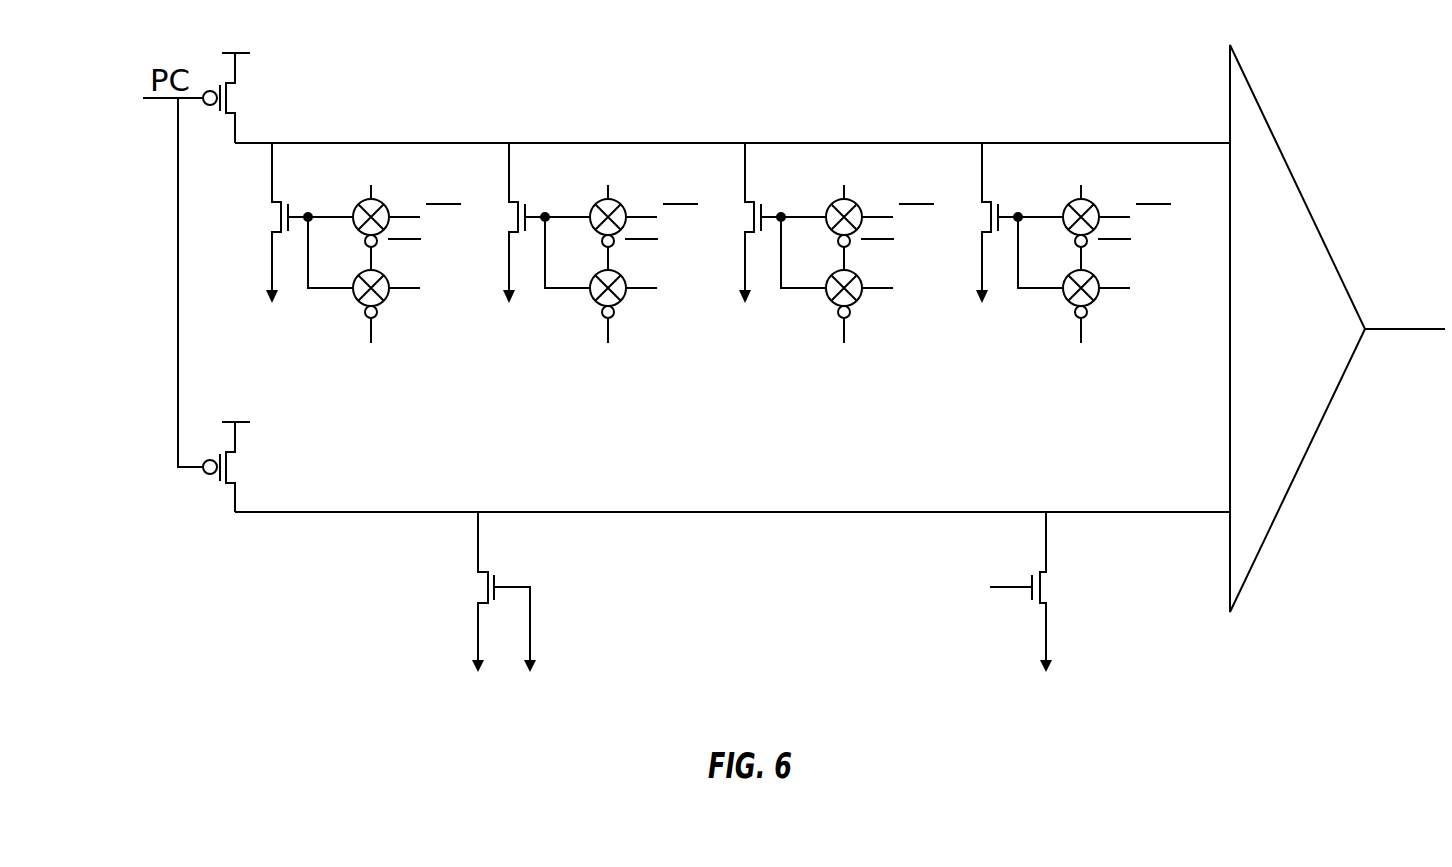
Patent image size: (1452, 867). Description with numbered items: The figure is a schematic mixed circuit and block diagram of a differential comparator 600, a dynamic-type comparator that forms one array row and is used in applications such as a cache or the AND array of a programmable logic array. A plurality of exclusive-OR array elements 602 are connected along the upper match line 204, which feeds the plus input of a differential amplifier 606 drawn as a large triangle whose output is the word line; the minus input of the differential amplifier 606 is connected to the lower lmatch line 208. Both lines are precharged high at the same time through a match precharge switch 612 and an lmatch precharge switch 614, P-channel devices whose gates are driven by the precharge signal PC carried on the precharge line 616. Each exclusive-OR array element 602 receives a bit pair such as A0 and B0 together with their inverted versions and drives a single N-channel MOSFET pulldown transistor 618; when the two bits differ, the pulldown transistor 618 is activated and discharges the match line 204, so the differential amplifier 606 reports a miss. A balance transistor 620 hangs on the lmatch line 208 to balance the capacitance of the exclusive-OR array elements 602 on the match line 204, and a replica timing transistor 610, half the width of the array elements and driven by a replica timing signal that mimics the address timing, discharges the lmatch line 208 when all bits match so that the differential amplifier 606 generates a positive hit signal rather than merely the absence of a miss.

The differential comparator 600 is at (480, 67).
The exclusive-OR array element 602 is at (316, 318).
The match line 204 is at (1012, 142).
The local match line (LMATCH) 208 is at (1015, 512).
The differential amplifier 606 is at (1258, 103).
The replica timing transistor 610 is at (1037, 606).
The match precharge switch 612 is at (231, 100).
The lmatch precharge switch 614 is at (225, 469).
The precharge line 616 is at (180, 336).
The N-channel MOSFET pulldown transistor 618 is at (280, 218).
The balance transistor 620 is at (496, 576).